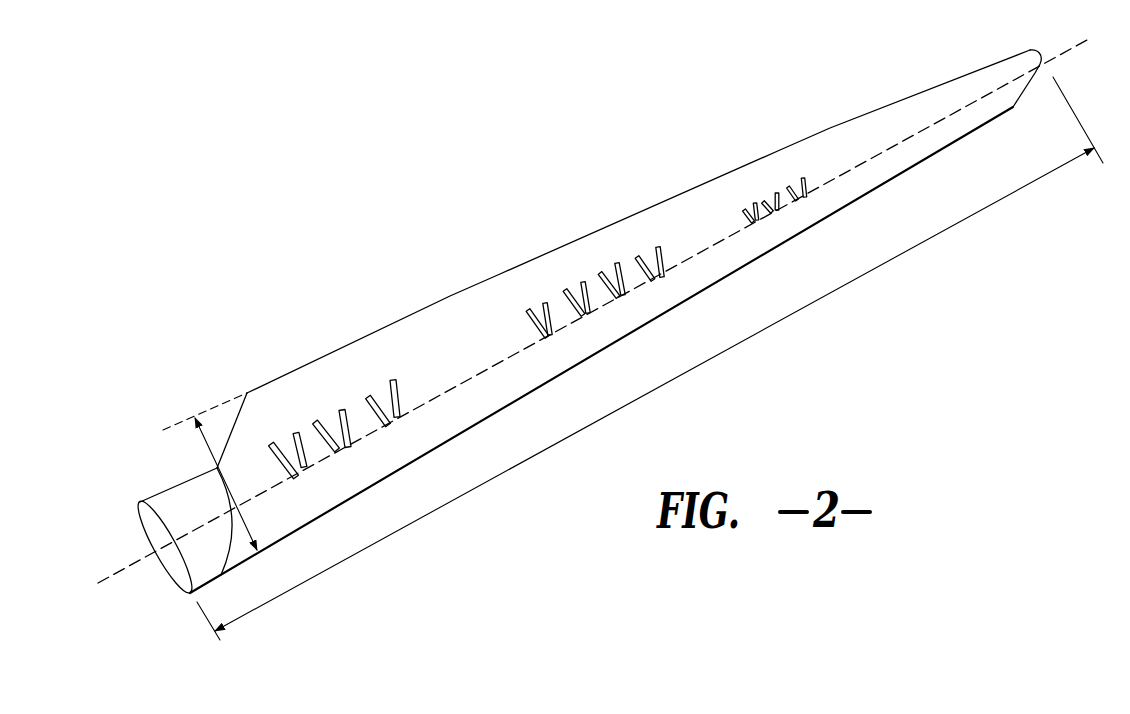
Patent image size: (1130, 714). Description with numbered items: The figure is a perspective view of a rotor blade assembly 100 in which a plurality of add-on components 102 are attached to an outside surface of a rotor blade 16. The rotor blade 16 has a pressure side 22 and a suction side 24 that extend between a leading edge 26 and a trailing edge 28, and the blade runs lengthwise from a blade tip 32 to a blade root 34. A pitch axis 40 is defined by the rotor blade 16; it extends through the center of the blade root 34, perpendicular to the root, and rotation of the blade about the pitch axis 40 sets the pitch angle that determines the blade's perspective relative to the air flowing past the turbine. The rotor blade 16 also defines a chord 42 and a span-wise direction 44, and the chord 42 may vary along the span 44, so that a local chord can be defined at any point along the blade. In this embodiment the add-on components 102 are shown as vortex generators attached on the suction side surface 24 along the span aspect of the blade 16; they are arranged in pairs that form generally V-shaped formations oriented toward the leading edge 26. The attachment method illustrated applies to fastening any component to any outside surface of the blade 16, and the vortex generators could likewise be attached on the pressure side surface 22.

The rotor blade assembly 100 is at (437, 205).
The rotor blade 16 is at (406, 306).
The pressure side 22 is at (700, 207).
The suction side 24 is at (333, 380).
The leading edge 26 is at (361, 491).
The trailing edge 28 is at (263, 385).
The blade tip 32 is at (1016, 60).
The blade root 34 is at (203, 555).
The pitch axis 40 is at (460, 383).
The chord 42 is at (220, 475).
The span-wise direction 44 is at (678, 377).
The add-on components 102 is at (592, 258).